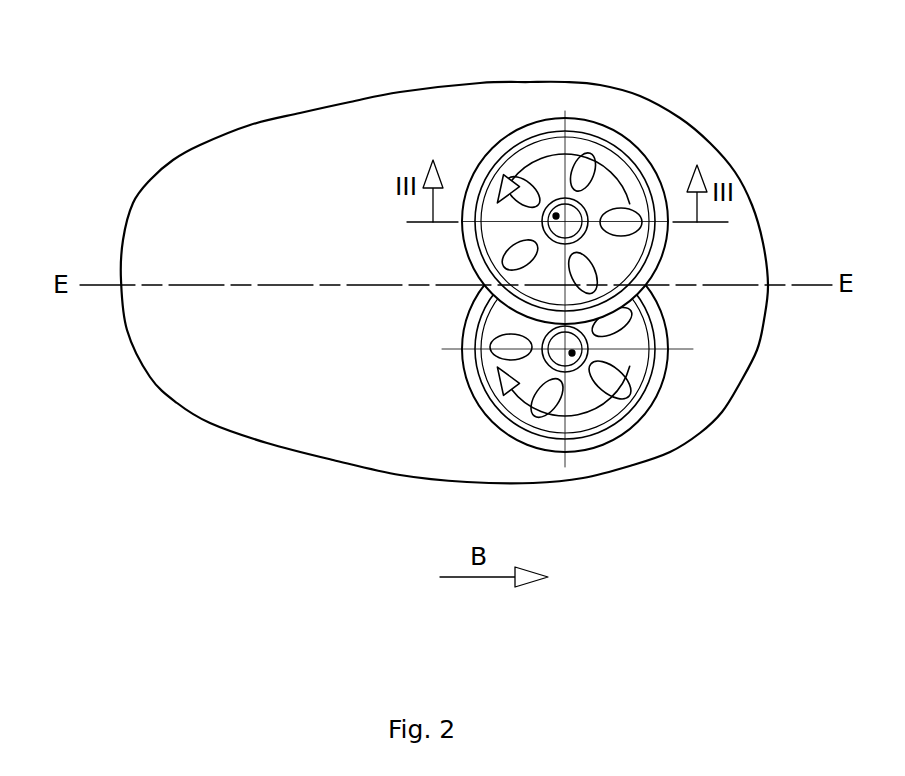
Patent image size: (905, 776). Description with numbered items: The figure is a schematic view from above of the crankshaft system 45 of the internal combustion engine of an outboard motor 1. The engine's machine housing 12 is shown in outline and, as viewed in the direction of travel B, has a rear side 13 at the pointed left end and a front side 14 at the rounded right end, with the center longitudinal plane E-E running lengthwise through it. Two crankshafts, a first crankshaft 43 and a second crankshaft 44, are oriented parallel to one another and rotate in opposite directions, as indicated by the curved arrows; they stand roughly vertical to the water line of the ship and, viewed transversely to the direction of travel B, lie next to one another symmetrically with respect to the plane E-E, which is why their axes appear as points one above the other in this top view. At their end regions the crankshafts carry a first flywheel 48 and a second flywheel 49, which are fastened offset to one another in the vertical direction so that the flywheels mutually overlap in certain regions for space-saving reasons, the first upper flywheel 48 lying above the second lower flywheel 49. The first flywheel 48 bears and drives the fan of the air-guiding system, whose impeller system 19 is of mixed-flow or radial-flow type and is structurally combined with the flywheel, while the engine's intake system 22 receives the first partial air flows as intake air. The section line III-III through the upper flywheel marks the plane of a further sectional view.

The outboard motor 1 is at (752, 103).
The machine housing 12 is at (682, 102).
The rear side 13 is at (90, 326).
The front side 14 is at (795, 312).
The impeller system 19 is at (757, 222).
The intake system 22 is at (593, 103).
The first crankshaft 43 is at (556, 216).
The second crankshaft 44 is at (572, 353).
The crankshaft system 45 is at (689, 269).
The first flywheel 48 is at (484, 134).
The second flywheel 49 is at (690, 377).